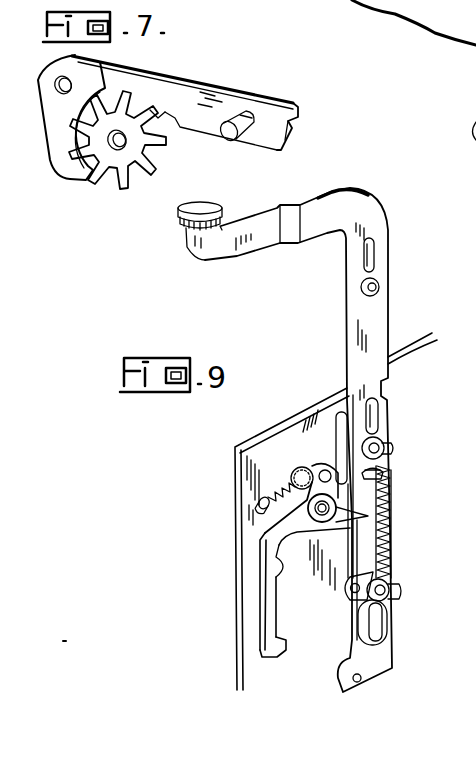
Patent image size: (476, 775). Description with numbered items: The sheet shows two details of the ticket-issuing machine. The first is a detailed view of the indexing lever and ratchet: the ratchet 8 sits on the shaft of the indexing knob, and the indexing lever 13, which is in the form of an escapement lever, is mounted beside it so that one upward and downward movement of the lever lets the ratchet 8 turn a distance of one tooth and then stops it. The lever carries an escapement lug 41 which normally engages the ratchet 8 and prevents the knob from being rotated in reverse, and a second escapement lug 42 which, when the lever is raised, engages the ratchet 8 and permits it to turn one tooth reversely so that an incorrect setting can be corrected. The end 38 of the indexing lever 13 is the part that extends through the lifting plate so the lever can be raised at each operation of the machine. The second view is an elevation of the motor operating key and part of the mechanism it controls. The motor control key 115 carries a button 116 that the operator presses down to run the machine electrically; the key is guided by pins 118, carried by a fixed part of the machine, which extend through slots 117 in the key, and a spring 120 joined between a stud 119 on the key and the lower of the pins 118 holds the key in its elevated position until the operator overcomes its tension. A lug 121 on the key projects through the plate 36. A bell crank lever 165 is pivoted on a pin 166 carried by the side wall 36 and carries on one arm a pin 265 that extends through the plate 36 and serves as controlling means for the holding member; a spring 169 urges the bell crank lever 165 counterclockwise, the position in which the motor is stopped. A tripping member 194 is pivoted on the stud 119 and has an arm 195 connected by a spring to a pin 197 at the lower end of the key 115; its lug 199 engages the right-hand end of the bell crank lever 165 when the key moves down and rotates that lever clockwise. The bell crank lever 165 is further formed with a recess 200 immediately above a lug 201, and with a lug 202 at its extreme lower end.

In FIG. 7, the ratchet 8 is at (137, 178).
In FIG. 7, the indexing lever 13 is at (217, 103).
In FIG. 7, the end of the indexing lever 38 is at (298, 112).
In FIG. 7, the escapement lug 41 is at (150, 110).
In FIG. 7, the escapement lug 42 is at (78, 181).
In FIG. 9, the plate 36 is at (265, 447).
In FIG. 9, the motor control key 115 is at (370, 218).
In FIG. 9, the button 116 is at (212, 205).
In FIG. 9, the slots 117 is at (375, 257).
In FIG. 9, the pins 118 is at (373, 287).
In FIG. 9, the stud 119 is at (400, 592).
In FIG. 9, the spring 120 is at (392, 527).
In FIG. 9, the lug 121 is at (338, 437).
In FIG. 9, the bell crank lever 165 is at (283, 530).
In FIG. 9, the pin 166 is at (321, 515).
In FIG. 9, the spring 169 is at (290, 492).
In FIG. 9, the tripping member 194 is at (392, 575).
In FIG. 9, the arm 195 is at (351, 589).
In FIG. 9, the pin 197 is at (357, 683).
In FIG. 9, the lug 199 is at (383, 473).
In FIG. 9, the recess 200 is at (278, 551).
In FIG. 9, the lug 201 is at (276, 567).
In FIG. 9, the lug 202 is at (282, 660).
In FIG. 9, the pin 265 is at (305, 466).